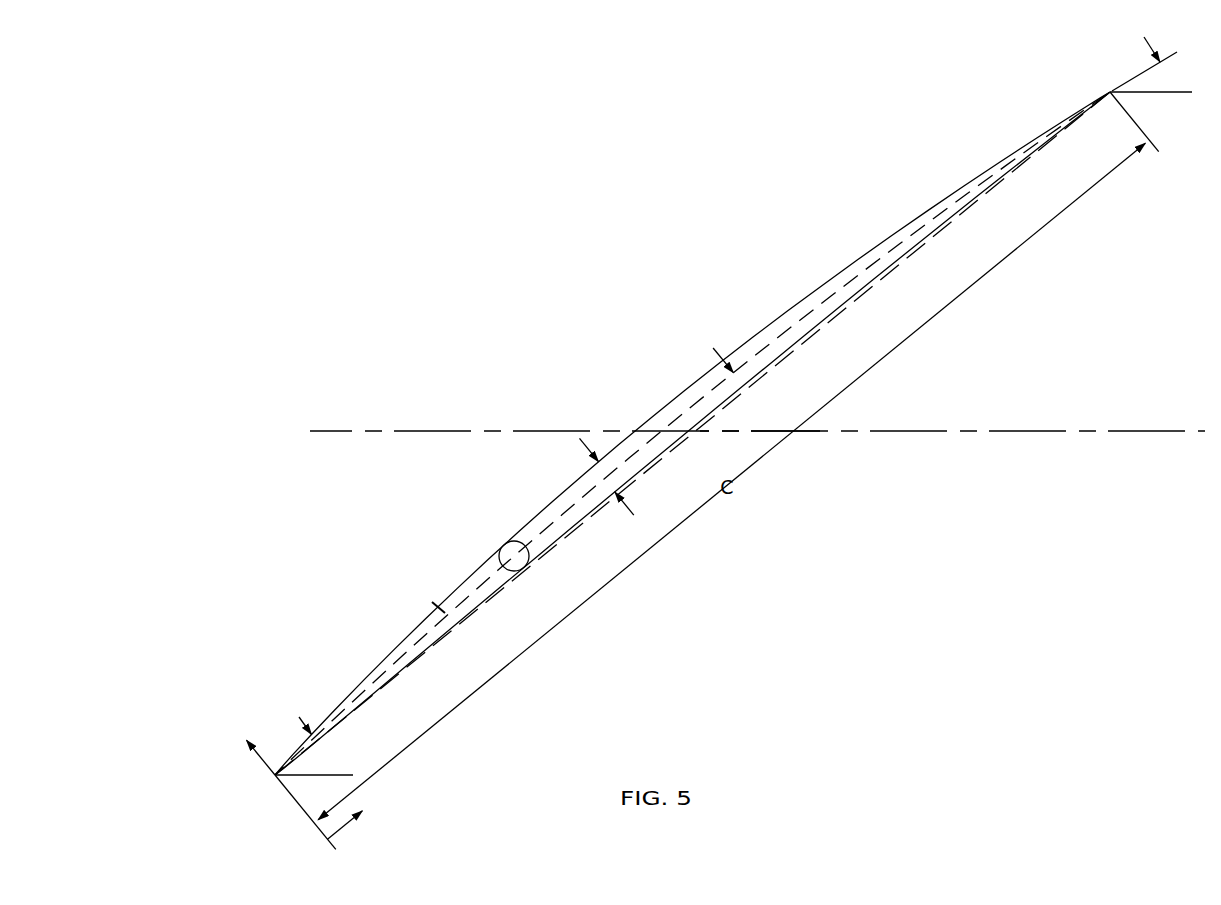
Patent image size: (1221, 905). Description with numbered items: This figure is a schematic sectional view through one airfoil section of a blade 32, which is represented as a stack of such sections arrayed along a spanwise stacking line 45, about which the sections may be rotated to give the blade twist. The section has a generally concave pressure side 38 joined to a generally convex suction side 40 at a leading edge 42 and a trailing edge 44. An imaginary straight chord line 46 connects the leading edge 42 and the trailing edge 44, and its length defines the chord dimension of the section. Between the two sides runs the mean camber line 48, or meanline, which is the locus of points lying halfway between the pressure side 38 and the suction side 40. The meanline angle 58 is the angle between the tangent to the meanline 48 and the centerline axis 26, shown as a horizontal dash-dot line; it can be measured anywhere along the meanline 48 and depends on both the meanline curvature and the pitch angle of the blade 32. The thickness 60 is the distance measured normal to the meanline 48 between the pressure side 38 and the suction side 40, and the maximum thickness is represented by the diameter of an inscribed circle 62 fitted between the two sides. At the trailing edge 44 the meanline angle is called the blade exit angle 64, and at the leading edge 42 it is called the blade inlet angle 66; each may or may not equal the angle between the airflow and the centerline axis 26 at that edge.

The centerline axis 26 is at (1042, 431).
The blade 32 is at (692, 433).
The pressure side 38 is at (1020, 163).
The suction side 40 is at (1014, 153).
The leading edge 42 is at (270, 773).
The trailing edge 44 is at (1110, 88).
The spanwise stacking line 45 is at (565, 518).
The chord line 46 is at (465, 621).
The mean camber line 48 is at (432, 602).
The meanline angle 58 is at (752, 456).
The thickness 60 is at (516, 541).
The inscribed circle 62 is at (499, 556).
The blade exit angle 64 is at (1152, 120).
The blade inlet angle 66 is at (313, 797).